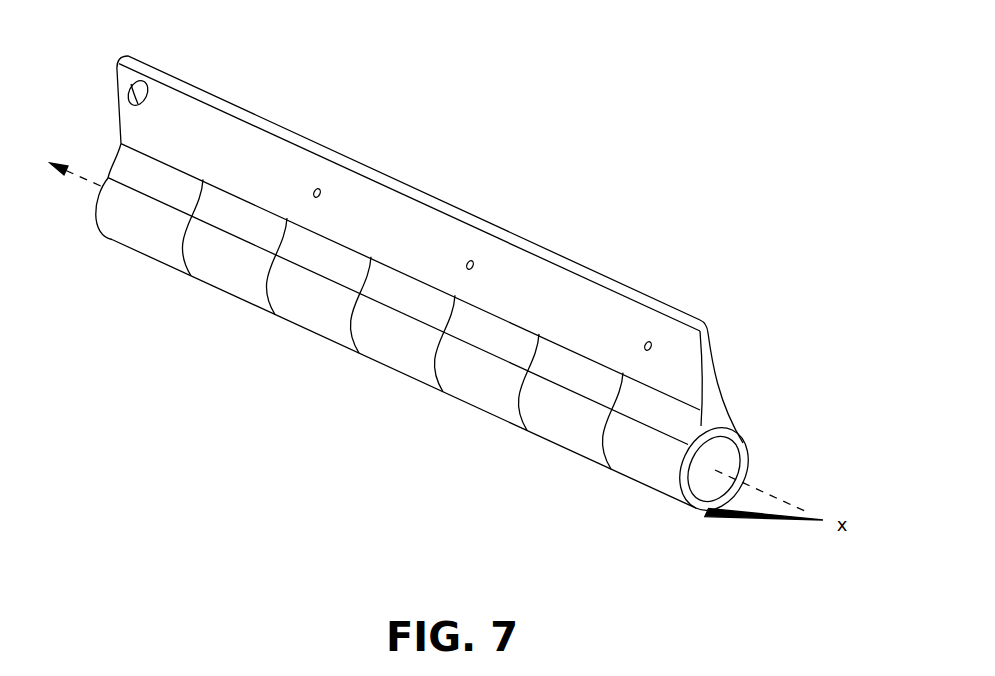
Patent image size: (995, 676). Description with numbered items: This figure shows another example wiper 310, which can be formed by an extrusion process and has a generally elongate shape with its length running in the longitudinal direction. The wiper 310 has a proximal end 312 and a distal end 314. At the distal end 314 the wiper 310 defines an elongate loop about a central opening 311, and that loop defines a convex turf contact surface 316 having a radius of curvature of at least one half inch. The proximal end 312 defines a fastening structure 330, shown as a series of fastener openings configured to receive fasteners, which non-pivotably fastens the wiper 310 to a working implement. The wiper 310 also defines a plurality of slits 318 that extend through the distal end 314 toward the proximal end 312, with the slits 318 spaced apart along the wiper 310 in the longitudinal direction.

The wiper 310 is at (542, 78).
The central opening 311 is at (708, 490).
The proximal end 312 is at (658, 287).
The distal end 314 is at (258, 392).
The convex turf contact surface 316 is at (478, 410).
The slits 318 is at (264, 290).
The fastening structure 330 is at (469, 261).